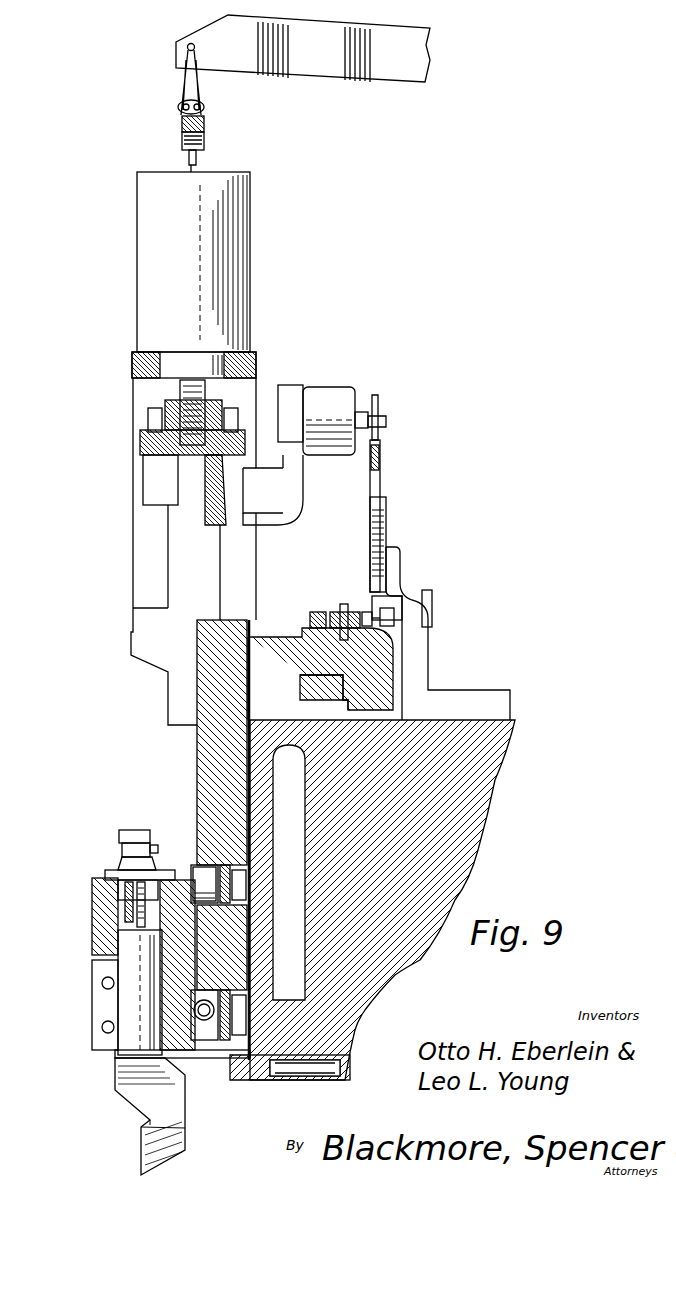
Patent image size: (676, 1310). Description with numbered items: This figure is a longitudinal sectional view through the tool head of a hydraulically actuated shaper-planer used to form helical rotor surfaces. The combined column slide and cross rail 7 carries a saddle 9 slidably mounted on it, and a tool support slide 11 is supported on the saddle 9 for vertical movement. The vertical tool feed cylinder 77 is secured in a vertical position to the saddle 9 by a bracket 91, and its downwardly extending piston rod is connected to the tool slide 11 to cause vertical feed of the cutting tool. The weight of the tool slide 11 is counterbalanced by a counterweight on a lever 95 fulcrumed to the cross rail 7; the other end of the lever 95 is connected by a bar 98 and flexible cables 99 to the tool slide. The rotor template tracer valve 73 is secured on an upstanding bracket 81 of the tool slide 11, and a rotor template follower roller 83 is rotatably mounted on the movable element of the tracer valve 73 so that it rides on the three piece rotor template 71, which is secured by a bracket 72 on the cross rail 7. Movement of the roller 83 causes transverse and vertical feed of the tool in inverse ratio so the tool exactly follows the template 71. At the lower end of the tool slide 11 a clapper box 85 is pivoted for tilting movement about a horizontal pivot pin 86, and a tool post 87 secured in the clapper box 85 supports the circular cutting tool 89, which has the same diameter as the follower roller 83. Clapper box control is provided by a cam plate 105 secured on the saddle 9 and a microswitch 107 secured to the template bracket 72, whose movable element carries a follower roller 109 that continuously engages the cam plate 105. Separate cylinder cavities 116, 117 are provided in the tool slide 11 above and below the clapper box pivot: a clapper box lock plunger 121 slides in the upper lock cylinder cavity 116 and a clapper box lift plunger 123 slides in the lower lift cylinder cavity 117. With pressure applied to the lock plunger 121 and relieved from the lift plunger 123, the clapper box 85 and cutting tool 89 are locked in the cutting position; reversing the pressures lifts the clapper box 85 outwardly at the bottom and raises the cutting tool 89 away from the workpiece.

The lever 95 is at (390, 62).
The flexible cables 99 is at (190, 165).
The bar 98 is at (204, 124).
The vertical tool feed cylinder 77 is at (155, 232).
The bracket 91 is at (150, 595).
The tool support slide 11 is at (238, 623).
The rotor template tracer valve 73 is at (328, 395).
The upstanding bracket 81 is at (295, 492).
The rotor template follower roller 83 is at (380, 398).
The rotor template 71 is at (381, 462).
The bracket 72 is at (480, 690).
The microswitch 107 is at (430, 592).
The saddle 9 is at (385, 672).
The cam plate 105 is at (318, 610).
The follower roller 109 is at (366, 610).
The combined column slide and cross rail 7 is at (480, 778).
The upper lock cylinder cavity 116 is at (247, 880).
The lower lift cylinder cavity 117 is at (247, 1000).
The clapper box lock plunger 121 is at (205, 872).
The horizontal pivot pin 86 is at (170, 900).
The clapper box 85 is at (105, 898).
The tool post 87 is at (125, 1002).
The circular cutting tool 89 is at (140, 1143).
The clapper box lift plunger 123 is at (240, 1052).